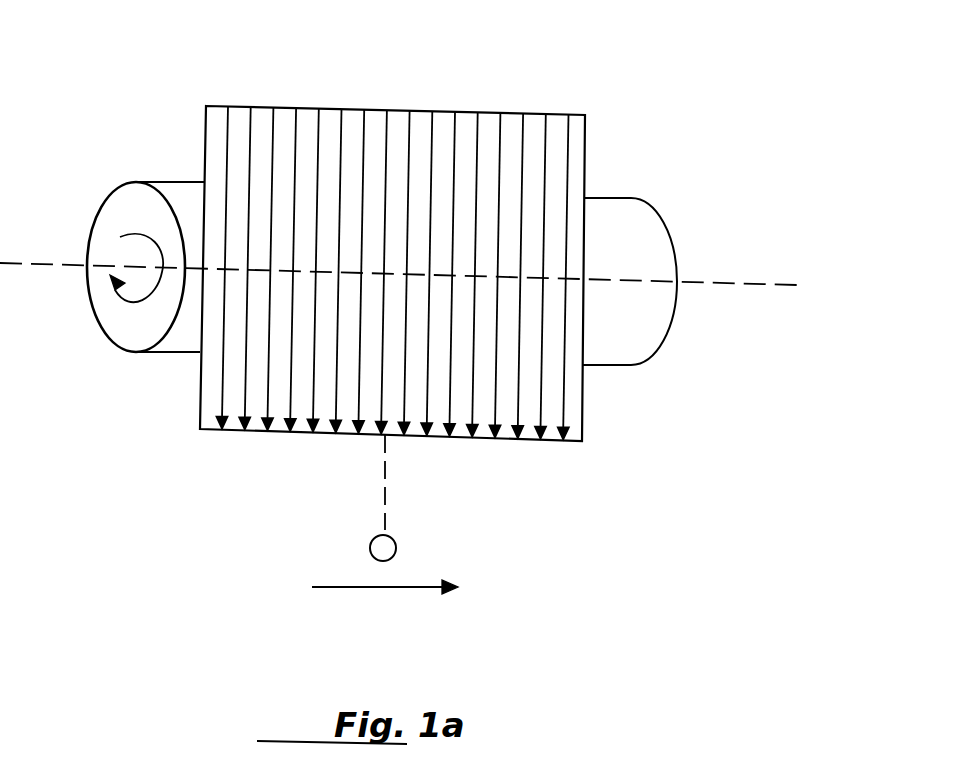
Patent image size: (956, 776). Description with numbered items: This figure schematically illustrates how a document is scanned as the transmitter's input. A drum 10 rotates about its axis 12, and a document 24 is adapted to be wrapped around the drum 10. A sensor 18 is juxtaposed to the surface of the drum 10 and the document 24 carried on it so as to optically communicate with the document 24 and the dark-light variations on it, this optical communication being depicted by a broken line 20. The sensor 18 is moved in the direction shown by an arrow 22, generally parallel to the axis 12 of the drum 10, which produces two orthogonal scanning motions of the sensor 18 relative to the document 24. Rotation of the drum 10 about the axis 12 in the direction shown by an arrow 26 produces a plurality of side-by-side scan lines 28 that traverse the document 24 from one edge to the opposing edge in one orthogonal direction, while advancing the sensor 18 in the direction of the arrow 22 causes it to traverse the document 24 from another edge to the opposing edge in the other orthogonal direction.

The drum 10 is at (618, 217).
The axis 12 is at (707, 283).
The sensor 18 is at (398, 545).
The broken line 20 is at (383, 470).
The arrow 22 is at (393, 588).
The document 24 is at (214, 105).
The arrow 26 is at (133, 225).
The scan lines 28 is at (320, 135).